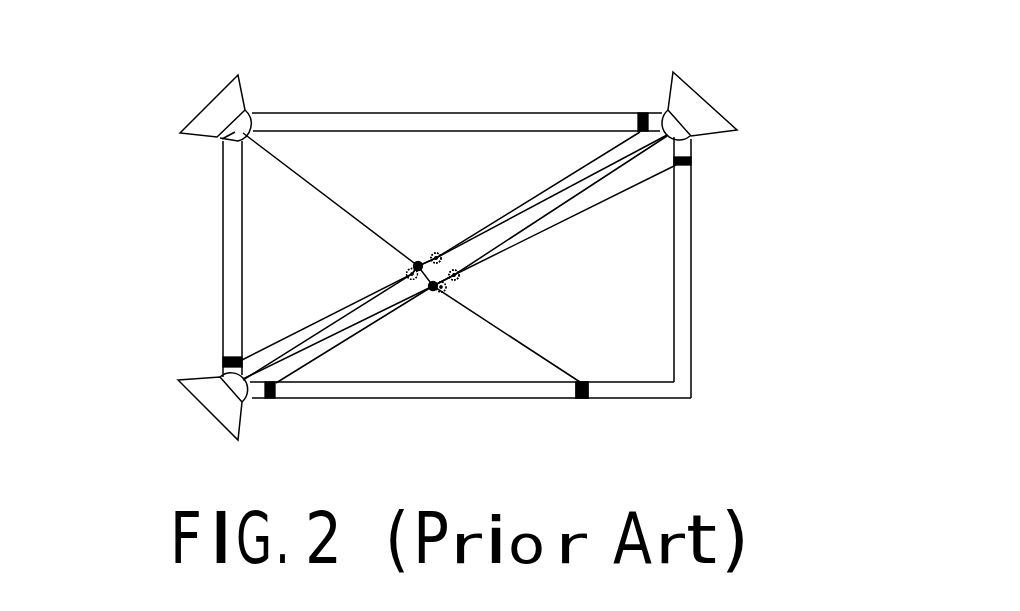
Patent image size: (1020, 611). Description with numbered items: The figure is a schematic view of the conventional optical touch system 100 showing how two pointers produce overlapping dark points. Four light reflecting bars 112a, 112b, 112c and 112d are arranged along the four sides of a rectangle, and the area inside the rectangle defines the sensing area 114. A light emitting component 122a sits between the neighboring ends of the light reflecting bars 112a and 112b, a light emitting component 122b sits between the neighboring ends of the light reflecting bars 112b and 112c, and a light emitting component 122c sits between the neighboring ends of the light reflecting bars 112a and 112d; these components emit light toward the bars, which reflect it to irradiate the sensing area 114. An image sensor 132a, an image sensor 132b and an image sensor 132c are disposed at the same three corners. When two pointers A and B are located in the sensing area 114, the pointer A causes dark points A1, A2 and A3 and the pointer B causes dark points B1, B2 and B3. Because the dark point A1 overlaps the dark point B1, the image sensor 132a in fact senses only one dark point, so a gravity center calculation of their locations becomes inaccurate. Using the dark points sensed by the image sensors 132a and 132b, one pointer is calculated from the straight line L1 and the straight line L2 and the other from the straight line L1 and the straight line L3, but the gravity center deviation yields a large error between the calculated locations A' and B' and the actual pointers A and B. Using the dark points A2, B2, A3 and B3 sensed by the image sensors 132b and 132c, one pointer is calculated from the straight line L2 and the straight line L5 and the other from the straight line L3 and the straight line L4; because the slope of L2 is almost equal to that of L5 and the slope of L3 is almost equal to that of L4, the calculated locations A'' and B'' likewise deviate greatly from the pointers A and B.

The optical touch system 100 is at (716, 483).
The light reflecting bar 112a is at (233, 222).
The light reflecting bar 112b is at (462, 113).
The light reflecting bar 112c is at (682, 278).
The light reflecting bar 112d is at (437, 399).
The sensing area 114 is at (264, 280).
The light emitting component 122a is at (237, 137).
The light emitting component 122b is at (690, 136).
The light emitting component 122c is at (247, 403).
The image sensor 132a is at (228, 103).
The image sensor 132b is at (715, 120).
The image sensor 132c is at (204, 396).
The pointer A is at (405, 242).
The pointer B is at (434, 318).
The calculated location of pointer A' is at (379, 268).
The calculated location of pointer A'' is at (445, 234).
The calculated location of pointer B' is at (471, 303).
The calculated location of pointer B'' is at (491, 267).
The dark point A1 is at (603, 409).
The dark point B1 is at (603, 409).
The dark point A2 is at (214, 355).
The dark point A3 is at (642, 104).
The dark point B2 is at (281, 409).
The dark point B3 is at (699, 174).
The straight line L1 is at (333, 203).
The straight line L2 is at (598, 165).
The straight line L3 is at (600, 183).
The straight line L4 is at (330, 346).
The straight line L5 is at (300, 340).